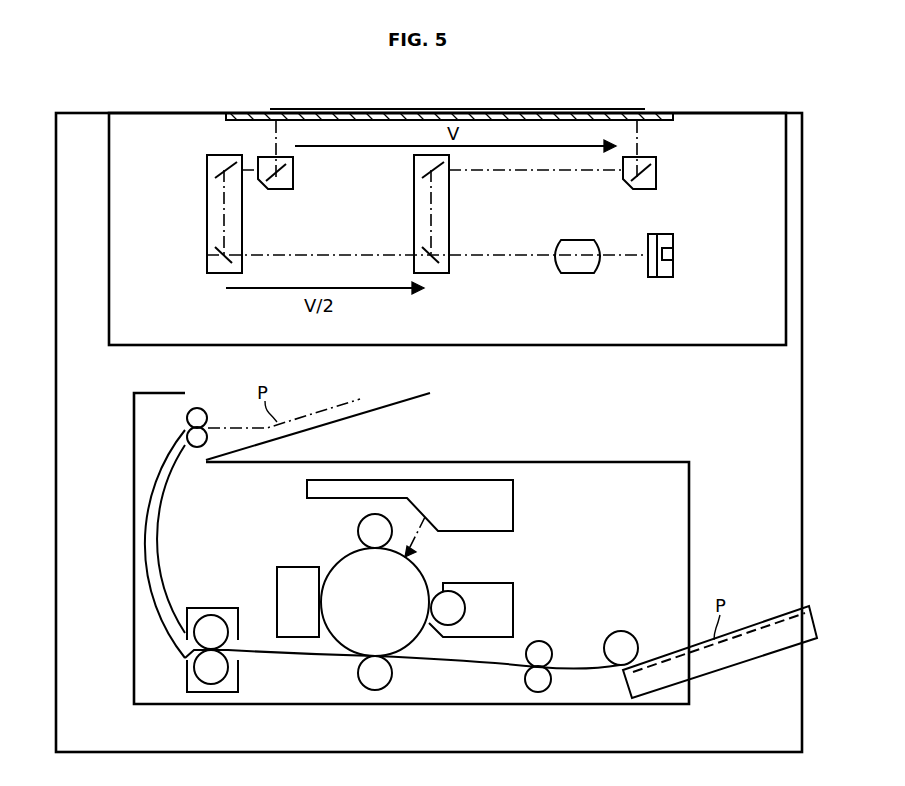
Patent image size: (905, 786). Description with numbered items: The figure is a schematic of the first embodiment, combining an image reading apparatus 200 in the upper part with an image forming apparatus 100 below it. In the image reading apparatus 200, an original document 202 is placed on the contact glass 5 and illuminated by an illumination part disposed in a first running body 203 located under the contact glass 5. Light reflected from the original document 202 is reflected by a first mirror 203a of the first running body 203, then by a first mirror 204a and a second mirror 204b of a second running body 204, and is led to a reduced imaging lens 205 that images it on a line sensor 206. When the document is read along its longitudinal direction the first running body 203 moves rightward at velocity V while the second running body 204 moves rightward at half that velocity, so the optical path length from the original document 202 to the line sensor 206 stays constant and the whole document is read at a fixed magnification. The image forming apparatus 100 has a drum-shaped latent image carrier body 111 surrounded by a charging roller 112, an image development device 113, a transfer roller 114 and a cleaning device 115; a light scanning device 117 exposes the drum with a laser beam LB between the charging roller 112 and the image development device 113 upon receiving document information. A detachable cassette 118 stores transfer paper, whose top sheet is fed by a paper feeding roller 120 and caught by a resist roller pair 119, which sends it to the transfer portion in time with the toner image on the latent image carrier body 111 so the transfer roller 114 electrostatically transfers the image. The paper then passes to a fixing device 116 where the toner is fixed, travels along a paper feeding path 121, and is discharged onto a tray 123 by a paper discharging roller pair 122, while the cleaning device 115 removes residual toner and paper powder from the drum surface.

The contact glass 5 is at (262, 113).
The image reading apparatus 200 is at (723, 114).
The original document 202 is at (340, 108).
The first running body 203 is at (299, 191).
The first mirror 203a is at (278, 189).
The second running body 204 is at (193, 209).
The first mirror 204a is at (206, 175).
The second mirror 204b is at (207, 258).
The reduced imaging lens 205 is at (572, 239).
The line sensor 206 is at (670, 234).
The image forming apparatus 100 is at (691, 462).
The latent image carrier body 111 is at (428, 580).
The charging roller 112 is at (358, 528).
The image development device 113 is at (514, 595).
The transfer roller 114 is at (393, 680).
The cleaning device 115 is at (282, 566).
The fixing device 116 is at (238, 680).
The light scanning device 117 is at (514, 492).
The cassette 118 is at (733, 665).
The resist roller pair 119 is at (548, 643).
The paper feeding roller 120 is at (628, 630).
The paper feeding path 121 is at (160, 533).
The paper discharging roller pair 122 is at (200, 407).
The tray 123 is at (404, 399).
The laser beam LB is at (425, 540).